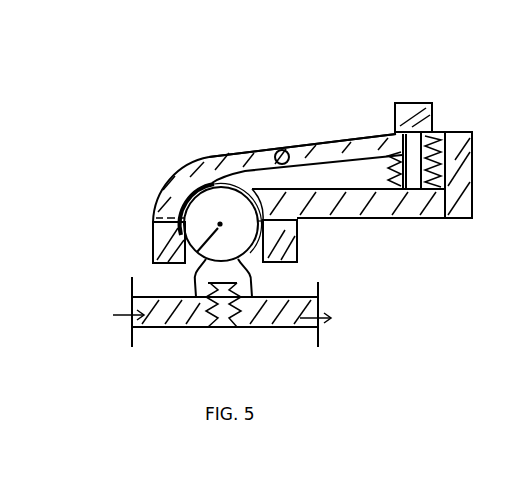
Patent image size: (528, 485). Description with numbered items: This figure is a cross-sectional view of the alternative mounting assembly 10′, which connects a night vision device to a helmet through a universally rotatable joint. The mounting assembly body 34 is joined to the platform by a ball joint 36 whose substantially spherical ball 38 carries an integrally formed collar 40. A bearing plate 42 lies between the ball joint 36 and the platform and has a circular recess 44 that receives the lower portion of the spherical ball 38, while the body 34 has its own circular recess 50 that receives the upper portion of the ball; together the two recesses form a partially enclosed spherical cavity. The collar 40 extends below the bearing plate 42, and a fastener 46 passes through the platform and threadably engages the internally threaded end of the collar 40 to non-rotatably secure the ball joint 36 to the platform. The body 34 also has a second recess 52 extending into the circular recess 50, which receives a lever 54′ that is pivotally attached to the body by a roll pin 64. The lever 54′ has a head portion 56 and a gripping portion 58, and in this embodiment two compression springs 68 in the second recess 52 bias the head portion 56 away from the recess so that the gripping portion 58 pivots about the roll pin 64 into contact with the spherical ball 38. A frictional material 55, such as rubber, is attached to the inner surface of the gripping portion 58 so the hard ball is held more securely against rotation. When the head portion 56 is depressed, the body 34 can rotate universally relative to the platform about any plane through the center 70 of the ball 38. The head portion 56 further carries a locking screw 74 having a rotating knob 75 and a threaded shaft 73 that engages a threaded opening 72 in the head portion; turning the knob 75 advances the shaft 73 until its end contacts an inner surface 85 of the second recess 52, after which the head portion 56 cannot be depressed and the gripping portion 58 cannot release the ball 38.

The mounting assembly 10′ is at (286, 57).
The mounting assembly body 34 is at (359, 223).
The ball joint 36 is at (206, 183).
The spherical ball 38 is at (255, 285).
The collar 40 is at (163, 300).
The bearing plate 42 is at (299, 242).
The circular recess 44 is at (153, 220).
The fastener 46 is at (231, 328).
The circular recess 50 is at (284, 197).
The second recess 52 is at (369, 178).
The lever 54′ is at (337, 138).
The frictional material 55 is at (188, 196).
The head portion 56 is at (394, 104).
The gripping portion 58 is at (156, 196).
The roll pin 64 is at (271, 149).
The compression spring 68 is at (431, 200).
The center 70 is at (166, 263).
The threaded opening 72 is at (440, 131).
The threaded shaft 73 is at (471, 133).
The locking screw 74 is at (419, 94).
The rotating knob 75 is at (423, 101).
The inner surface 85 is at (405, 191).